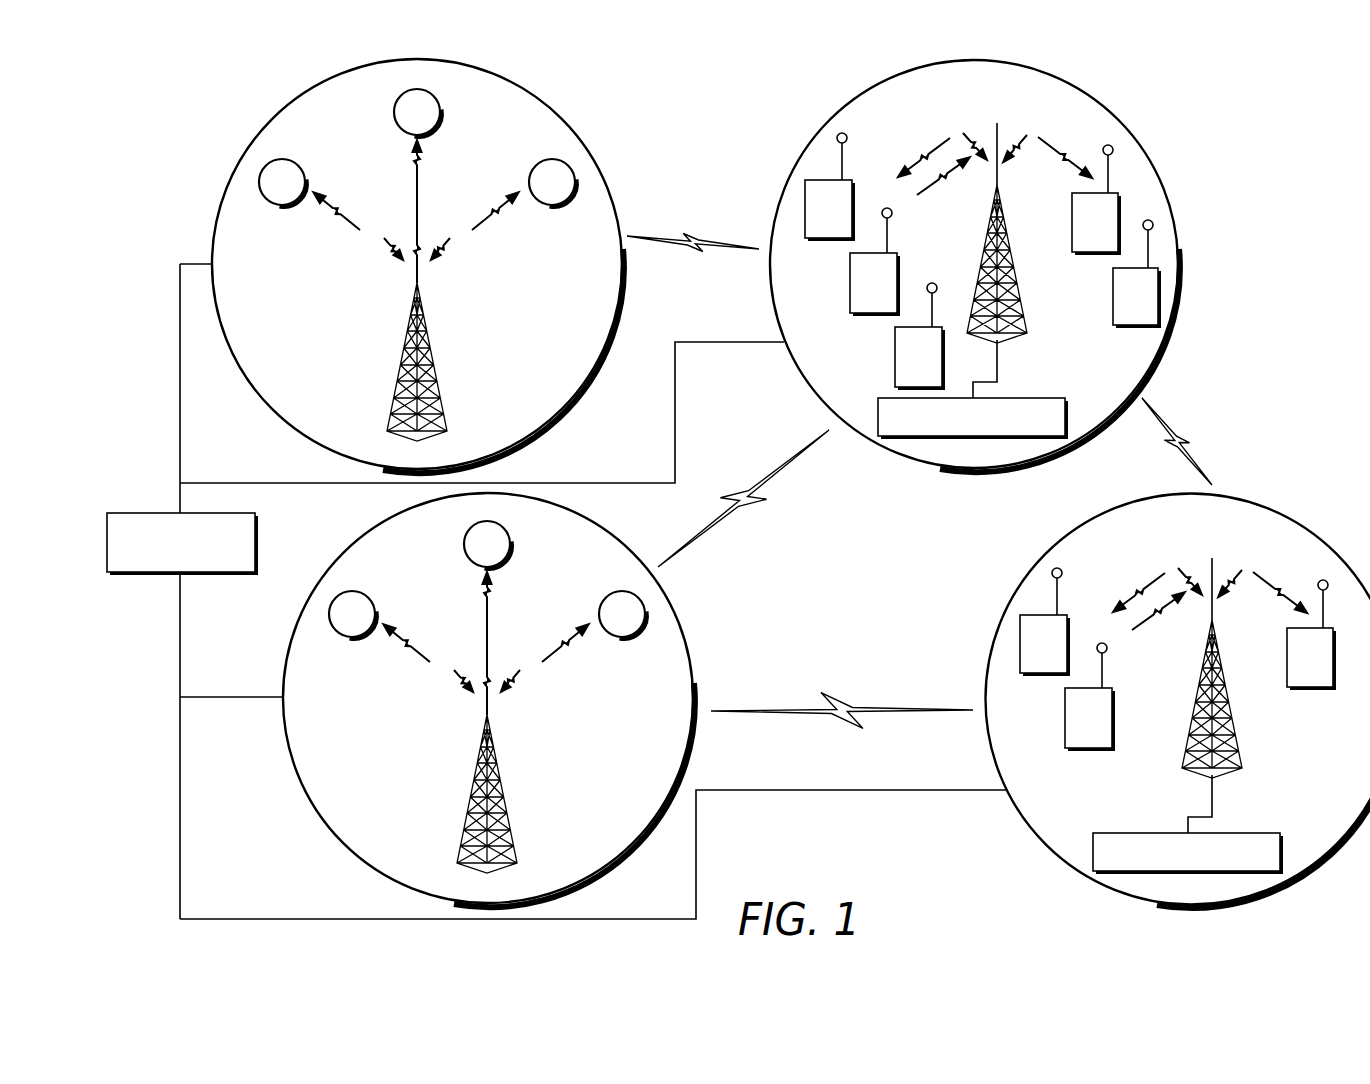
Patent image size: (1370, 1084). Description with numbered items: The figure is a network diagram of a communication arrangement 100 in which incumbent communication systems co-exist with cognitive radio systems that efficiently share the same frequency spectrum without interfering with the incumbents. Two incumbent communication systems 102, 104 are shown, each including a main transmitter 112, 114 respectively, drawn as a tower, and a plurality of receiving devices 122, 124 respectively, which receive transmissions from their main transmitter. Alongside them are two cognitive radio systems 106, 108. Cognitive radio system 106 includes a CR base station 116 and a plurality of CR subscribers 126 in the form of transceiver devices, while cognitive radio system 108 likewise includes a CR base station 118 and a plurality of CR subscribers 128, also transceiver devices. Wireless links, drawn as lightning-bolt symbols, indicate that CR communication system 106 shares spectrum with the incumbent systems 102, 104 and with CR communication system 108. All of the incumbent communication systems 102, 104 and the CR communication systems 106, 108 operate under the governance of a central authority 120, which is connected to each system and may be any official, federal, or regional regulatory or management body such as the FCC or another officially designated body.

The communication system 100 is at (1334, 105).
The incumbent communication system 102 is at (562, 118).
The incumbent communication system 104 is at (584, 522).
The cognitive radio system 106 is at (1063, 84).
The cognitive radio system 108 is at (1280, 518).
The main transmitter 112 is at (437, 391).
The main transmitter 114 is at (509, 794).
The CR base station 116 is at (1050, 398).
The CR base station 118 is at (1203, 716).
The central authority 120 is at (162, 513).
The receiving devices 122 is at (294, 163).
The receiving devices 124 is at (488, 580).
The CR subscribers 126 is at (851, 181).
The CR subscribers 128 is at (1178, 659).